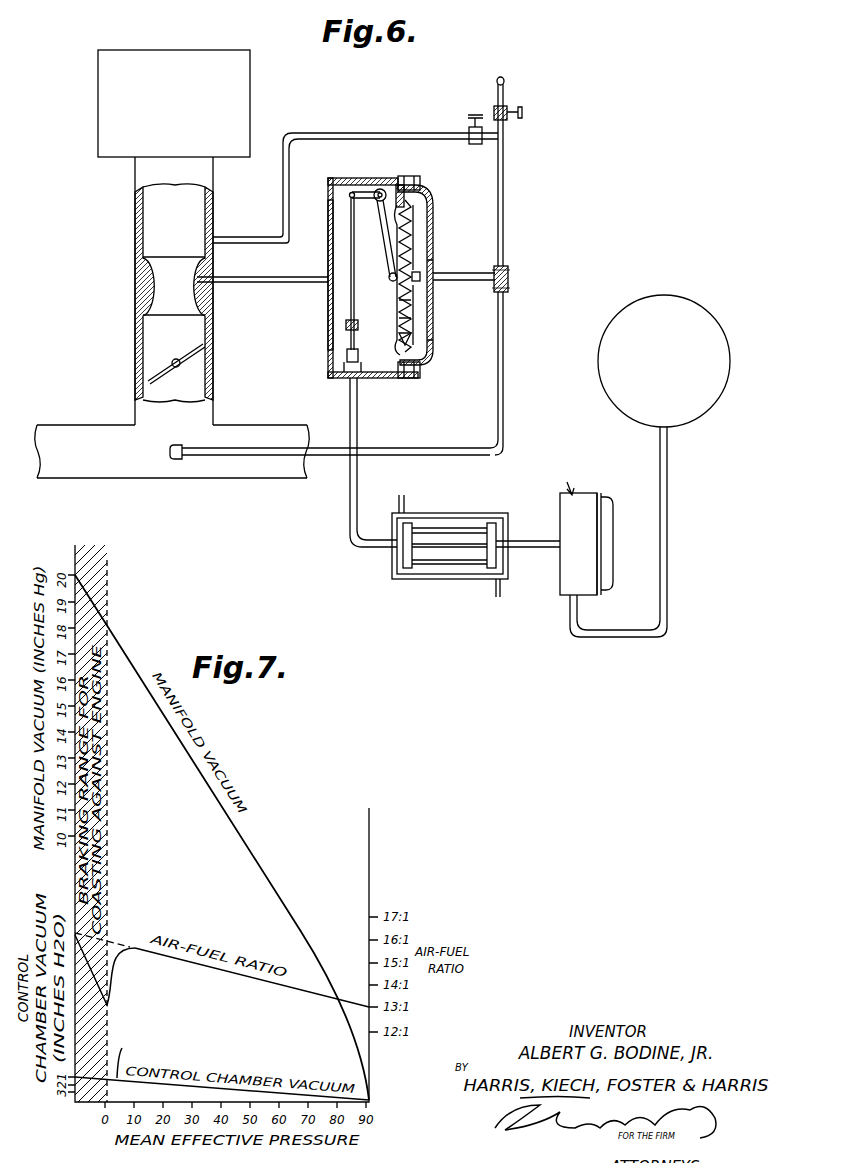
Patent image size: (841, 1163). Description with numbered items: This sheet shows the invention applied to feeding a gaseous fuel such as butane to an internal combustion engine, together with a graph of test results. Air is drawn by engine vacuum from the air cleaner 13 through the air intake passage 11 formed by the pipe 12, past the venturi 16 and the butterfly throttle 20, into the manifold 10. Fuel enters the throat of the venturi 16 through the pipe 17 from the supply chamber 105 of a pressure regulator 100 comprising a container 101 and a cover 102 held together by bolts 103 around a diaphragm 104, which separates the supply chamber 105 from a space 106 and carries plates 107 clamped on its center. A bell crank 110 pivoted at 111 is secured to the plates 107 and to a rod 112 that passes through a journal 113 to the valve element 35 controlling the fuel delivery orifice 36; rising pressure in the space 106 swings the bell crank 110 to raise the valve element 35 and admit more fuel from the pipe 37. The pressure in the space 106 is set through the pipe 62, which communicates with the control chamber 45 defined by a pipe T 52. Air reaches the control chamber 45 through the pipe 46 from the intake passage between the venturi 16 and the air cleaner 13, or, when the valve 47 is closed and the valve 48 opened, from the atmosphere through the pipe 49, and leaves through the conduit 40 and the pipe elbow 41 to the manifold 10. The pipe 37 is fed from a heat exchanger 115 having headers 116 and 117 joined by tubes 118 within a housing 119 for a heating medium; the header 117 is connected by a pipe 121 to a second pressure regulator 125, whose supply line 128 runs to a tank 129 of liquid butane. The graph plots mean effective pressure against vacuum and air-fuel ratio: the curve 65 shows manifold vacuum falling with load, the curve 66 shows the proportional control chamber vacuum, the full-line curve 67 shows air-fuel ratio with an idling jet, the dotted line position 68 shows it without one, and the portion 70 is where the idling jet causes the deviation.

In FIG. 6, the manifold 10 is at (128, 472).
In FIG. 6, the air intake passage 11 is at (140, 214).
In FIG. 6, the pipe 12 is at (134, 340).
In FIG. 6, the air cleaner 13 is at (100, 106).
In FIG. 6, the venturi 16 is at (158, 286).
In FIG. 6, the pipe 17 is at (242, 283).
In FIG. 6, the throttle 20 is at (150, 372).
In FIG. 6, the valve element 35 is at (346, 354).
In FIG. 6, the fuel delivery orifice 36 is at (346, 376).
In FIG. 6, the pipe 37 is at (358, 416).
In FIG. 6, the conduit 40 is at (504, 353).
In FIG. 6, the pipe elbow 41 is at (178, 462).
In FIG. 6, the control chamber 45 is at (510, 282).
In FIG. 6, the pipe 46 is at (400, 131).
In FIG. 6, the valve 47 is at (474, 124).
In FIG. 6, the valve 48 is at (508, 119).
In FIG. 6, the pipe 49 is at (506, 82).
In FIG. 6, the pipe T 52 is at (510, 268).
In FIG. 6, the pipe 62 is at (418, 297).
In FIG. 7, the curve 65 is at (250, 850).
In FIG. 7, the curve 66 is at (122, 1048).
In FIG. 7, the full-line curve 67 is at (250, 976).
In FIG. 7, the dotted line position 68 is at (108, 942).
In FIG. 7, the portion 70 is at (114, 975).
In FIG. 6, the pressure regulator 100 is at (364, 172).
In FIG. 6, the container 101 is at (331, 298).
In FIG. 6, the cover 102 is at (434, 262).
In FIG. 6, the bolts 103 is at (421, 182).
In FIG. 6, the diaphragm 104 is at (411, 338).
In FIG. 6, the supply chamber 105 is at (342, 253).
In FIG. 6, the space 106 is at (428, 226).
In FIG. 6, the plates 107 is at (411, 317).
In FIG. 6, the bell crank 110 is at (409, 262).
In FIG. 6, the pivot 111 is at (382, 188).
In FIG. 6, the rod 112 is at (350, 224).
In FIG. 6, the journal 113 is at (346, 326).
In FIG. 6, the heat exchanger 115 is at (390, 562).
In FIG. 6, the header 116 is at (408, 523).
In FIG. 6, the header 117 is at (492, 523).
In FIG. 6, the tubes 118 is at (453, 528).
In FIG. 6, the housing 119 is at (486, 580).
In FIG. 6, the pipe 121 is at (532, 548).
In FIG. 6, the pressure regulator 125 is at (612, 546).
In FIG. 6, the supply line 128 is at (669, 611).
In FIG. 6, the tank 129 is at (697, 413).